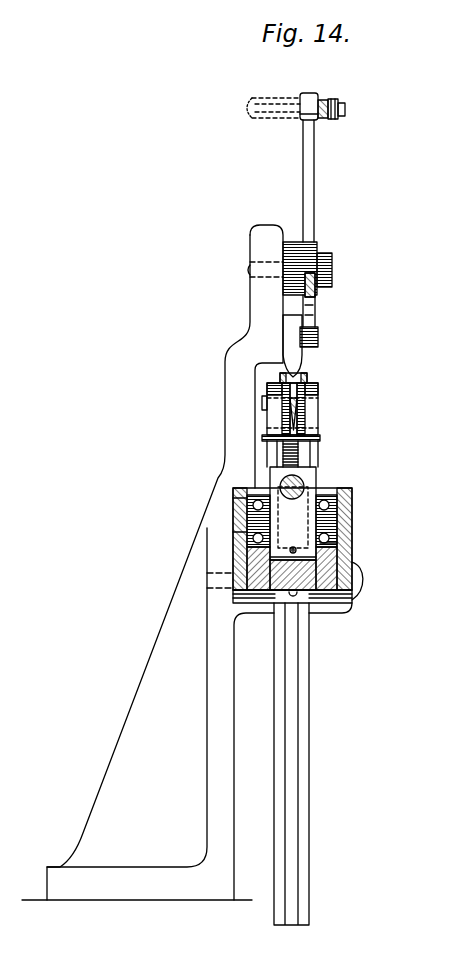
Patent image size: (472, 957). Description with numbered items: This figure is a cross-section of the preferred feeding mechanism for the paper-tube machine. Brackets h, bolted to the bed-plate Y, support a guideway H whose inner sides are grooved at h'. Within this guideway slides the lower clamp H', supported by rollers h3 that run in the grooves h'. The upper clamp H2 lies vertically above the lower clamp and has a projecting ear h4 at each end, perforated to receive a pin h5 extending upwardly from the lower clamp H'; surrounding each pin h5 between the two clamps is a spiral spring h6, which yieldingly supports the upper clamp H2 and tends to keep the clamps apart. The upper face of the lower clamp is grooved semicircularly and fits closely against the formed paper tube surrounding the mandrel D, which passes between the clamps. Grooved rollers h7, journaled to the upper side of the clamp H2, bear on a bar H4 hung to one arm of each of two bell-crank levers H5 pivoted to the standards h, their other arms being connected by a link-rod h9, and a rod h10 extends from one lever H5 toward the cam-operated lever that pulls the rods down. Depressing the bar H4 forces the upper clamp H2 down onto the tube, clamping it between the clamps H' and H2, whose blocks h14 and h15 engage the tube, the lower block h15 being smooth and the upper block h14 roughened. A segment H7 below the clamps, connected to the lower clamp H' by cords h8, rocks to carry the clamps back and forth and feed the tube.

The bracket h is at (165, 562).
The bed-plate Y is at (137, 922).
The link-rod h9 is at (330, 111).
The rod h10 is at (256, 124).
The bell-crank lever H5 is at (311, 276).
The bar H4 is at (290, 336).
The grooved roller h7 is at (309, 381).
The upper clamp H2 is at (304, 409).
The pin h5 is at (267, 429).
The projecting ear h4 is at (306, 441).
The spiral spring h6 is at (283, 461).
The upper block h14 is at (274, 466).
The mandrel D is at (304, 478).
The guideway H is at (305, 548).
The roller h3 is at (236, 489).
The lower block h15 is at (236, 499).
The groove h' is at (273, 524).
The lower clamp H' is at (350, 543).
The cord h8 is at (293, 547).
The segment H7 is at (304, 604).